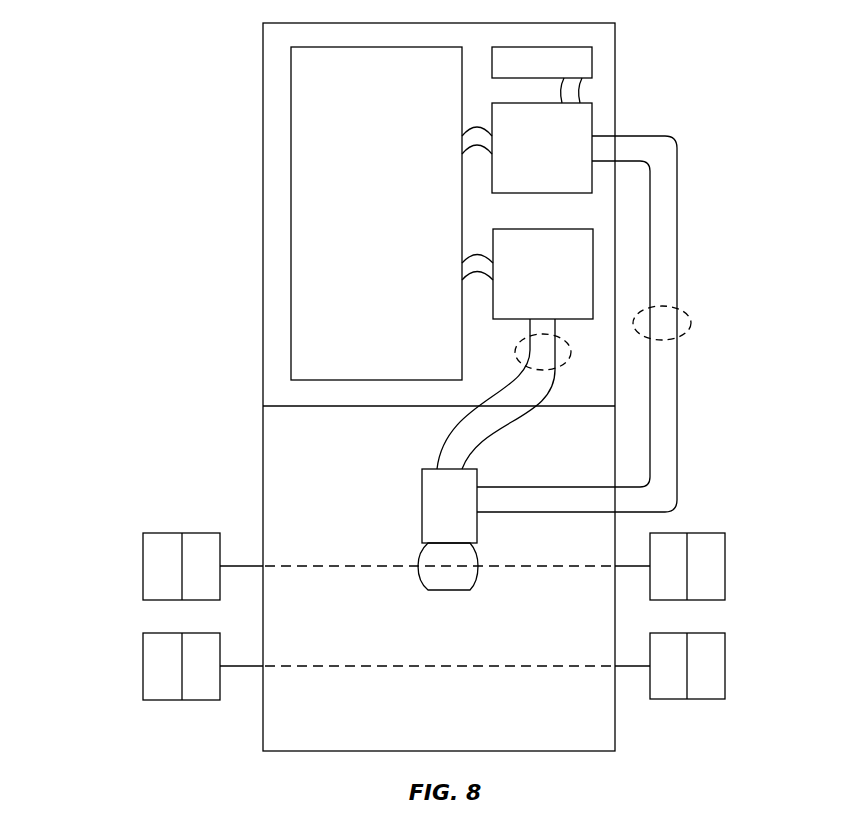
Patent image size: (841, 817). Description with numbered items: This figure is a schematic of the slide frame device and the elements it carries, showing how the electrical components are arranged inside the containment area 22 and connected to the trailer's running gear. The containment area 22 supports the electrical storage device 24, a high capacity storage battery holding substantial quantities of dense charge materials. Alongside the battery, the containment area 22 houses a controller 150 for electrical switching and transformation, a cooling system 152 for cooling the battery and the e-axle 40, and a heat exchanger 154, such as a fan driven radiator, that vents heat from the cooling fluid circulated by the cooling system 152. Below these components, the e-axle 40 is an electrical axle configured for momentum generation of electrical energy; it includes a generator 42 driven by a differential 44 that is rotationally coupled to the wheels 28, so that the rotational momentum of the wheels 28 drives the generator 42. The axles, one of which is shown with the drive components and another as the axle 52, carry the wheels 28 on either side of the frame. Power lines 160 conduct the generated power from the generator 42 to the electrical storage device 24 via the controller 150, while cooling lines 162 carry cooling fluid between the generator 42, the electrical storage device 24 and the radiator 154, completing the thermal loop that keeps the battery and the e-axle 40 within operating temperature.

The containment area 22 is at (226, 180).
The electrical storage device 24 is at (392, 213).
The wheels 28 is at (143, 565).
The e-axle 40 is at (455, 598).
The generator 42 is at (422, 494).
The differential 44 is at (421, 557).
The axle 52 is at (393, 663).
The controller 150 is at (543, 274).
The cooling system 152 is at (542, 148).
The heat exchanger 154 is at (592, 64).
The power lines 160 is at (572, 370).
The cooling lines 162 is at (683, 310).